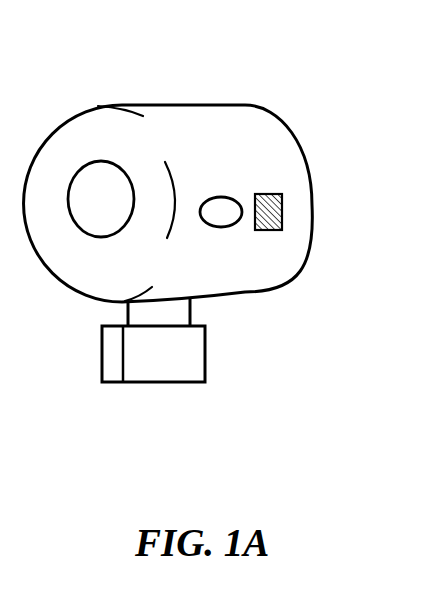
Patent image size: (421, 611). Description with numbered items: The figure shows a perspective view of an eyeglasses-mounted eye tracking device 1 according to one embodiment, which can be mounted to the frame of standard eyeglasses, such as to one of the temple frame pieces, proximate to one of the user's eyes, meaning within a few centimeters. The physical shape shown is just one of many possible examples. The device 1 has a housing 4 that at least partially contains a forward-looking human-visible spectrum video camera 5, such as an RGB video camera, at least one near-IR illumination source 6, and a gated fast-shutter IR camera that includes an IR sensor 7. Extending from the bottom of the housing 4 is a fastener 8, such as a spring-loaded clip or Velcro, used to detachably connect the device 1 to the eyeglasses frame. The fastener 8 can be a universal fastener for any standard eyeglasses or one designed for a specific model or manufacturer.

The eye tracking device 1 is at (207, 220).
The housing 4 is at (301, 148).
The forward-looking human-visible spectrum video camera 5 is at (130, 227).
The near-IR illumination source 6 is at (283, 218).
The IR sensor 7 is at (233, 226).
The fastener 8 is at (205, 358).